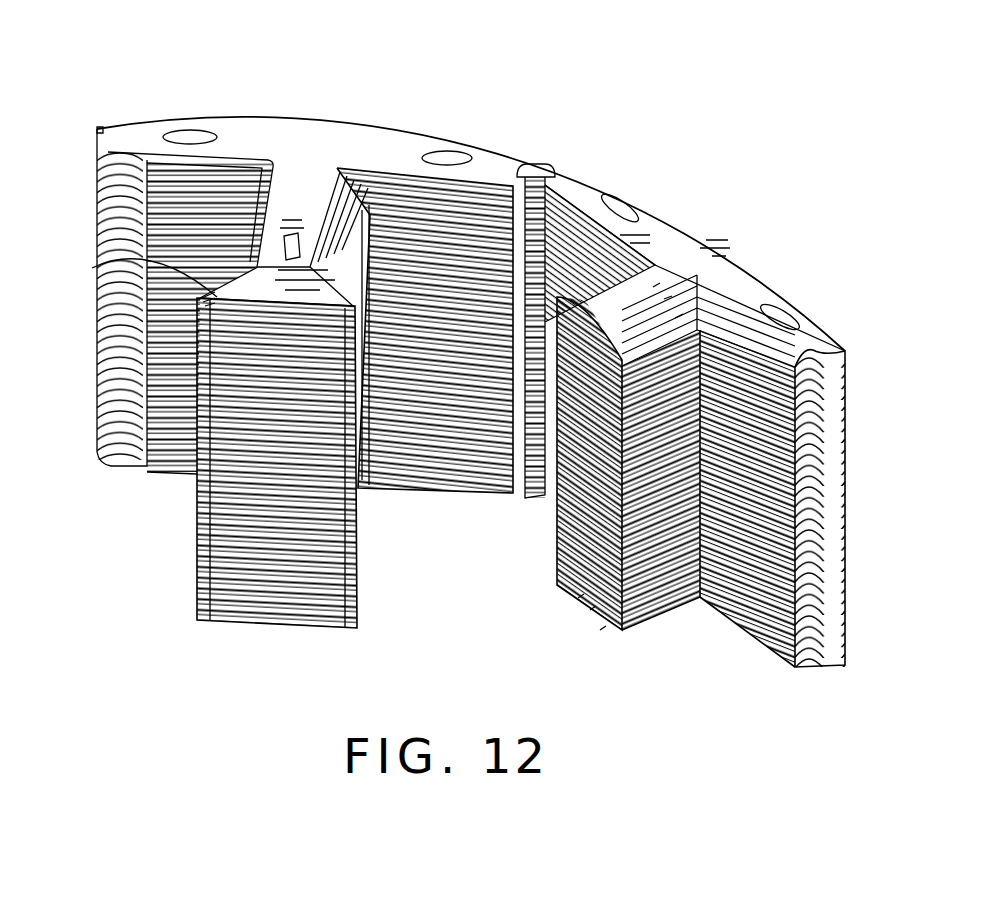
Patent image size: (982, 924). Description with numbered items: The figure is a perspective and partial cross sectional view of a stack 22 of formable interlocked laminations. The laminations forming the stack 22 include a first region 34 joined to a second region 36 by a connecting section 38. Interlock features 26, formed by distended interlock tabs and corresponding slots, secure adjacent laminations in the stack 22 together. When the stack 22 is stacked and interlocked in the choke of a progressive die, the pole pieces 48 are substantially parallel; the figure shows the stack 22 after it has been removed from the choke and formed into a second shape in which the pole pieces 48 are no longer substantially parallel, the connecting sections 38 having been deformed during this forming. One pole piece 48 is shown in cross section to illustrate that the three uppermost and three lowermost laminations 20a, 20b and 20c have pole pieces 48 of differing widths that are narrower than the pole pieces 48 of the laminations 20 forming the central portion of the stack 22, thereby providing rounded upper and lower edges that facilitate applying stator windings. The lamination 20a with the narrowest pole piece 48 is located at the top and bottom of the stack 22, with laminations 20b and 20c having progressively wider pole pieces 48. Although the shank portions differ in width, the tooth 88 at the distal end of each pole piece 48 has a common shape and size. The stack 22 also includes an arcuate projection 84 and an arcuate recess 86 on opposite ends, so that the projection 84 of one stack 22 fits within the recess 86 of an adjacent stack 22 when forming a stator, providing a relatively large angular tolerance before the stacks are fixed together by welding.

The stack 22 is at (456, 73).
The laminations 20 is at (556, 510).
The lamination 20a is at (215, 293).
The lamination 20b is at (215, 296).
The lamination 20c is at (200, 300).
The interlock features 26 is at (192, 130).
The first region 34 is at (352, 130).
The second region 36 is at (716, 249).
The connecting section 38 is at (550, 170).
The pole pieces 48 is at (292, 232).
The arcuate projection 84 is at (97, 128).
The arcuate recess 86 is at (834, 348).
The tooth 88 is at (92, 270).